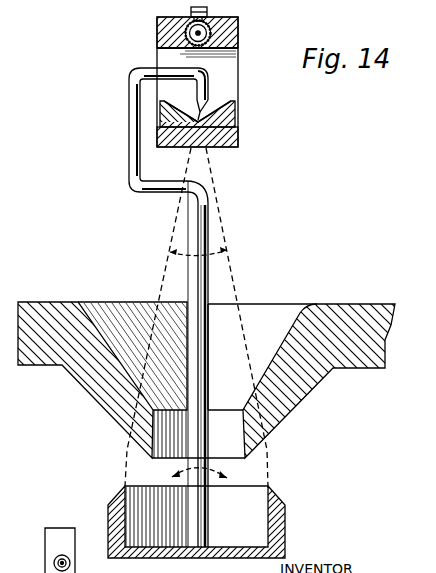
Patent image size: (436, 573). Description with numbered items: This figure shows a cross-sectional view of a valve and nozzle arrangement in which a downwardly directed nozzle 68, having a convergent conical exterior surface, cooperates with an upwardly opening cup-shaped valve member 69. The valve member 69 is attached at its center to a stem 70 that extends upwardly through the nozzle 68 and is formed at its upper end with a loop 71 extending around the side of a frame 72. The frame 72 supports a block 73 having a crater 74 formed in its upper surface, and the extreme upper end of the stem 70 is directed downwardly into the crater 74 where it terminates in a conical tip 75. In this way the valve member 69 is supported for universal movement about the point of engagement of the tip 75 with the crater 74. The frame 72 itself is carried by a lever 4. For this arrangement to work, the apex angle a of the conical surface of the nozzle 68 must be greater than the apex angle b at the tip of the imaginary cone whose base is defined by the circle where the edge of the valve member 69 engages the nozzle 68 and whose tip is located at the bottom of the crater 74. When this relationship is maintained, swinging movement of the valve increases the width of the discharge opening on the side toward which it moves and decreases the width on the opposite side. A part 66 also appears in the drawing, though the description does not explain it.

The lever 4 is at (211, 36).
The base member 66 is at (53, 535).
The nozzle 68 is at (303, 397).
The valve member 69 is at (282, 530).
The stem 70 is at (203, 283).
The loop 71 is at (145, 185).
The frame 72 is at (157, 55).
The block 73 is at (236, 118).
The crater 74 is at (218, 105).
The conical tip 75 is at (205, 97).
The apex angle of the conical surface of the nozzle a is at (199, 468).
The apex angle of the imaginary cone b is at (213, 249).